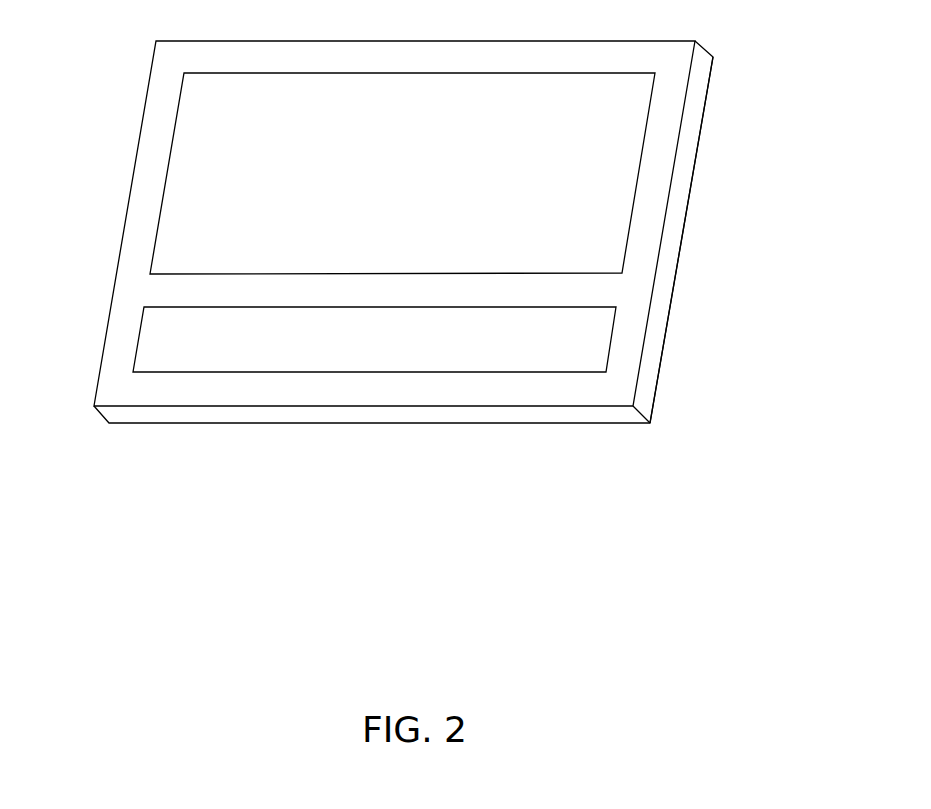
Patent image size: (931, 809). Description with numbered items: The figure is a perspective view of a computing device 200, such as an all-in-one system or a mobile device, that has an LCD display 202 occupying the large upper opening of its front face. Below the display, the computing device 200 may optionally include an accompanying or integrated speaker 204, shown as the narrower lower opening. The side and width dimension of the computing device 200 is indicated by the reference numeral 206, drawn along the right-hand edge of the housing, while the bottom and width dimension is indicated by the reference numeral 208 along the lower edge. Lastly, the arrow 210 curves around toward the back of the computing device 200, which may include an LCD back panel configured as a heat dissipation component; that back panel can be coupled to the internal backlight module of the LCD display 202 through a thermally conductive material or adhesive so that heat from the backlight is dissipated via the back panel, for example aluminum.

The computing device 200 is at (407, 366).
The LCD display 202 is at (220, 195).
The speaker 204 is at (196, 340).
The side and width dimension 206 is at (683, 212).
The bottom 208 is at (333, 415).
The arrow 210 is at (684, 316).